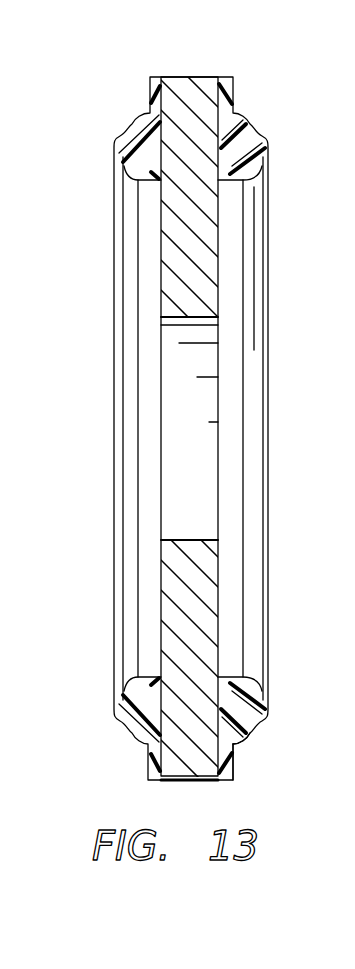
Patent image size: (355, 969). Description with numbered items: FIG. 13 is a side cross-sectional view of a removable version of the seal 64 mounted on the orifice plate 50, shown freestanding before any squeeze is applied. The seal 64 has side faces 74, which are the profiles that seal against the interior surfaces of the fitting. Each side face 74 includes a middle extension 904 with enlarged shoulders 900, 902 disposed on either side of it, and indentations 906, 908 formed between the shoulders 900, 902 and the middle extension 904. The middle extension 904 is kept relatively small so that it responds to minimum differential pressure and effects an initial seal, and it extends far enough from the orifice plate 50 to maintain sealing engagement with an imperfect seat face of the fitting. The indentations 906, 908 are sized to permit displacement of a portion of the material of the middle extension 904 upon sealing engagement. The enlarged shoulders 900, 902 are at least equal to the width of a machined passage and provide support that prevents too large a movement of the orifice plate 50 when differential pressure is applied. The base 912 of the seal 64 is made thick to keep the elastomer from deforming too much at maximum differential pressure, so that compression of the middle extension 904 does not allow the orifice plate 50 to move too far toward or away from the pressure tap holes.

The orifice plate 50 is at (193, 773).
The side faces 74 is at (256, 688).
The seal 64 is at (240, 738).
The base 912 is at (123, 741).
The enlarged shoulder 900 is at (262, 692).
The indentation 906 is at (261, 697).
The middle extension 904 is at (257, 718).
The indentation 908 is at (262, 723).
The enlarged shoulder 902 is at (254, 732).